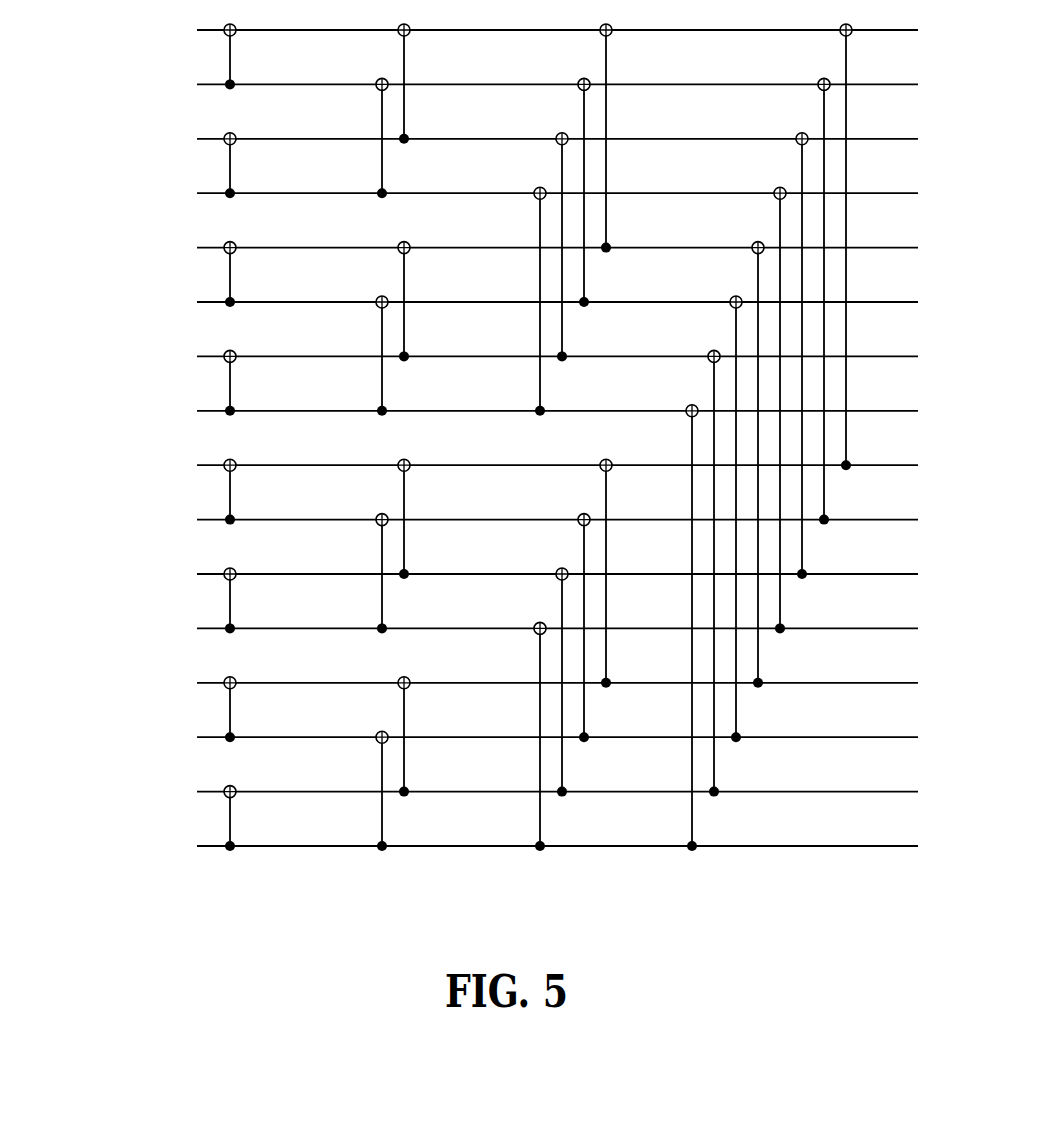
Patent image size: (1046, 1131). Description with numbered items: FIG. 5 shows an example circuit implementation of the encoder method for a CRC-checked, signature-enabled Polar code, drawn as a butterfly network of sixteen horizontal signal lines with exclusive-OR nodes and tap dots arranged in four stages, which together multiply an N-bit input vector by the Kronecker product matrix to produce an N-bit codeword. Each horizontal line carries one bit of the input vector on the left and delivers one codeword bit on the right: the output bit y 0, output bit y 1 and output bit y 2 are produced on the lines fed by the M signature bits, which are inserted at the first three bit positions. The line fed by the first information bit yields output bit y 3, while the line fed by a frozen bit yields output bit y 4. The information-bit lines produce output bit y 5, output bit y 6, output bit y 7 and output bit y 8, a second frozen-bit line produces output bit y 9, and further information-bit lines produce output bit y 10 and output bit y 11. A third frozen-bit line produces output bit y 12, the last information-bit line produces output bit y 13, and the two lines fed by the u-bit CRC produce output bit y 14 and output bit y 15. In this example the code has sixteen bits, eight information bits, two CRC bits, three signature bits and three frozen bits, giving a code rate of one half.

The output bit y0 (signature (0) input line) 0 is at (498, 27).
The output bit y1 (signature (1) input line) 1 is at (498, 81).
The output bit y2 (signature (2) input line) 2 is at (498, 136).
The output bit y3 (info (0) input line) 3 is at (530, 190).
The output bit y4 (frozen 0 input line) 4 is at (563, 245).
The output bit y5 (info (1) input line) 5 is at (530, 299).
The output bit y6 (info (2) input line) 6 is at (530, 353).
The output bit y7 (info (3) input line) 7 is at (530, 408).
The output bit y8 (info (4) input line) 8 is at (530, 462).
The output bit y9 (frozen 0 input line) 9 is at (563, 517).
The output bit y10 (info (5) input line) 10 is at (535, 571).
The output bit y11 (info (6) input line) 11 is at (535, 625).
The output bit y12 (frozen 0 input line) 12 is at (568, 680).
The output bit y13 (info (7) input line) 13 is at (535, 734).
The output bit y14 (CRC (0) input line) 14 is at (527, 789).
The output bit y15 (CRC (1) input line) 15 is at (527, 843).